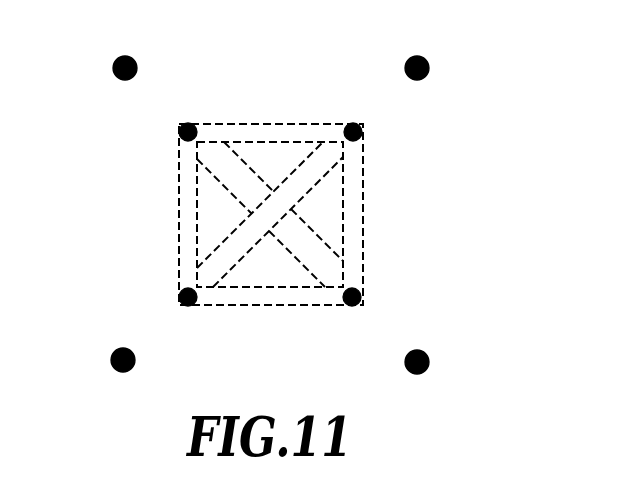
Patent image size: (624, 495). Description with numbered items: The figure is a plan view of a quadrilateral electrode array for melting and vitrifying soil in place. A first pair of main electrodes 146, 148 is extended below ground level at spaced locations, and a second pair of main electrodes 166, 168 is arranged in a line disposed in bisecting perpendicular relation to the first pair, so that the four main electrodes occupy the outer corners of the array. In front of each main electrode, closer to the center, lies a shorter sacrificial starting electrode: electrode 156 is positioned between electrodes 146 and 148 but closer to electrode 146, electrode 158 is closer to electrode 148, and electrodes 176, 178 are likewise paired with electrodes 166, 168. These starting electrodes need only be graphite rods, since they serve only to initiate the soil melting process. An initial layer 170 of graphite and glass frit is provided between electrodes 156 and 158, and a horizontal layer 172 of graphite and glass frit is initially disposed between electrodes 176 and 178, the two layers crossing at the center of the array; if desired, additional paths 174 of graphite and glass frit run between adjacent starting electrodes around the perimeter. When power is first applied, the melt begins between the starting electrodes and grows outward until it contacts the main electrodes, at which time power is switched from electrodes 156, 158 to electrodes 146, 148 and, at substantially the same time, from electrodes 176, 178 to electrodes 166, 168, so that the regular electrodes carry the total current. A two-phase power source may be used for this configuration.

The electrode 146 is at (121, 348).
The electrode 148 is at (428, 72).
The sacrificial electrode 156 is at (181, 301).
The sacrificial electrode 158 is at (361, 128).
The electrode 166 is at (134, 58).
The electrode 168 is at (428, 364).
The initial layer of graphite and glass frit 170 is at (298, 165).
The horizontal layer of graphite and glass frit 172 is at (285, 286).
The paths 174 is at (242, 123).
The electrode 176 is at (180, 128).
The electrode 178 is at (358, 300).